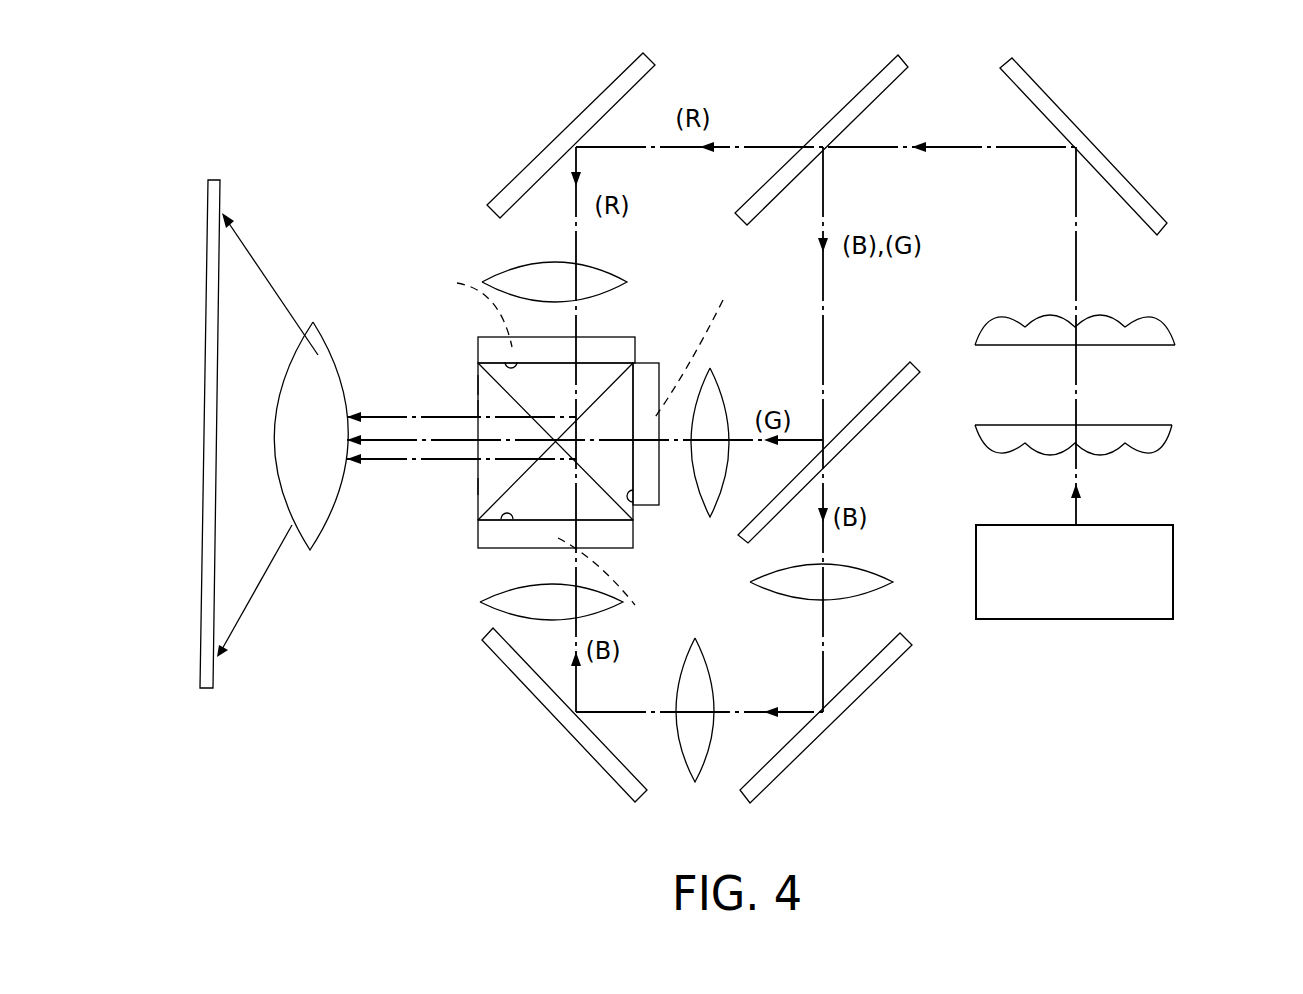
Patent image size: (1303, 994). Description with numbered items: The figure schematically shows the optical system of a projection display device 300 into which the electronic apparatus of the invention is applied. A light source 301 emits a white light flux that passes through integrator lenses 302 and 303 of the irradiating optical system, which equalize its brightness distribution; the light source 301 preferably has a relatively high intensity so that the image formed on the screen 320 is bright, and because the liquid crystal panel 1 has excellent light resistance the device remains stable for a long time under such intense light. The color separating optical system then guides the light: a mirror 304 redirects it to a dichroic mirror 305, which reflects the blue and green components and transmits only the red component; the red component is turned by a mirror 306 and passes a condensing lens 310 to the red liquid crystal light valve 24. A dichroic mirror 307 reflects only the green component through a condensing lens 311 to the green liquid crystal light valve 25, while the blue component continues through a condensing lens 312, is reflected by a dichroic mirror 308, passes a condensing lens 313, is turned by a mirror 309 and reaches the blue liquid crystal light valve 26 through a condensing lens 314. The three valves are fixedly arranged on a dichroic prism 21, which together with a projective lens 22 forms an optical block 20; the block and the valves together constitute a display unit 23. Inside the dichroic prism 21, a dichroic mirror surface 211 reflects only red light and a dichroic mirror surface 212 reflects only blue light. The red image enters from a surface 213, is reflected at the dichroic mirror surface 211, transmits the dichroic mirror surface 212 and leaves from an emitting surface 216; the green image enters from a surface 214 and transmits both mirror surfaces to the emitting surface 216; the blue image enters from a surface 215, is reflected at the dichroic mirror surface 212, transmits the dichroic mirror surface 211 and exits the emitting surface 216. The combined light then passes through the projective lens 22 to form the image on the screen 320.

The liquid crystal panel 1 is at (589, 447).
The optical block 20 is at (345, 575).
The dichroic prism 21 is at (487, 478).
The projective lens 22 is at (318, 355).
The display unit 23 is at (550, 399).
The liquid crystal light valve 24 is at (490, 347).
The liquid crystal light valve 25 is at (653, 387).
The liquid crystal light valve 26 is at (627, 535).
The dichroic mirror surface 211 is at (487, 489).
The dichroic mirror surface 212 is at (497, 383).
The surface 213 is at (507, 347).
The surface 214 is at (627, 500).
The surface 215 is at (498, 517).
The emitting surface 216 is at (478, 407).
The projection display device 300 is at (1193, 133).
The light source 301 is at (1173, 592).
The integrator lens 302 is at (1160, 440).
The integrator lens 303 is at (1160, 342).
The mirror 304 is at (1057, 110).
The dichroic mirror 305 is at (843, 110).
The mirror 306 is at (600, 97).
The dichroic mirror 307 is at (873, 397).
The dichroic mirror 308 is at (877, 673).
The mirror 309 is at (535, 688).
The condensing lens 310 is at (510, 275).
The condensing lens 311 is at (717, 402).
The condensing lens 312 is at (860, 572).
The condensing lens 313 is at (698, 760).
The condensing lens 314 is at (502, 602).
The screen 320 is at (212, 690).